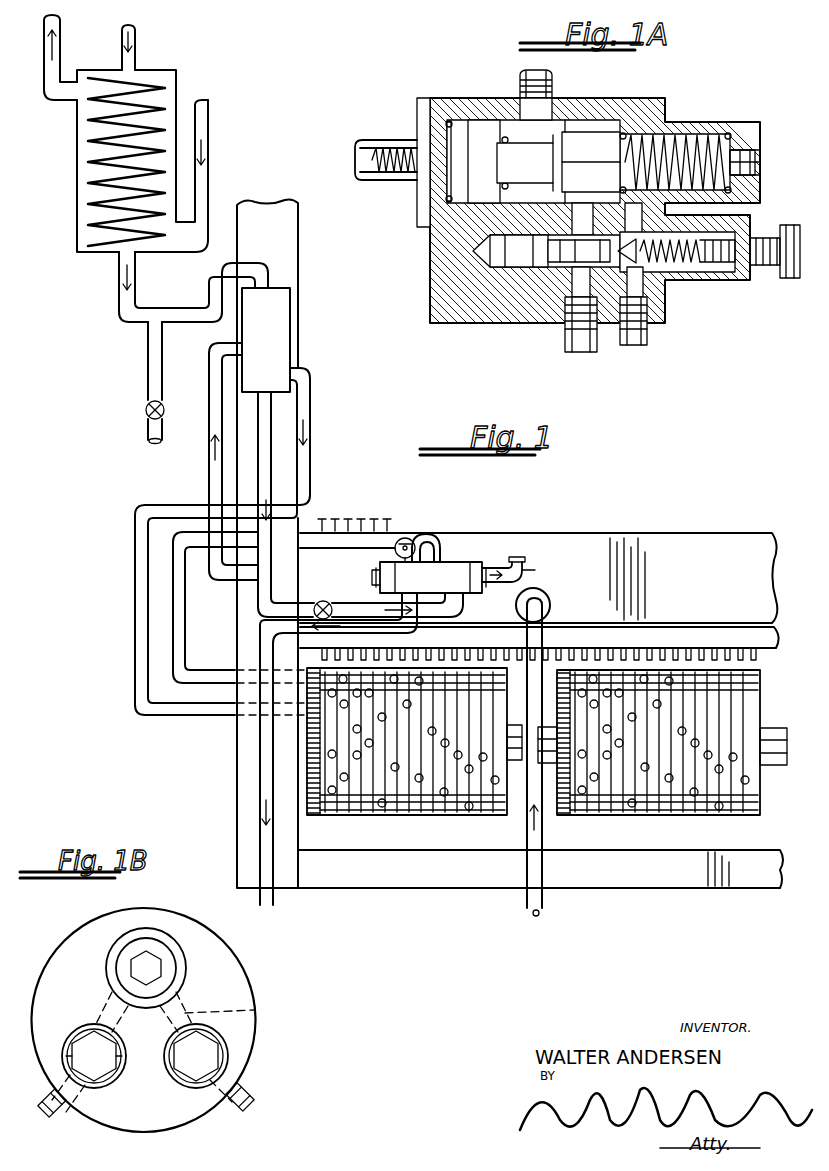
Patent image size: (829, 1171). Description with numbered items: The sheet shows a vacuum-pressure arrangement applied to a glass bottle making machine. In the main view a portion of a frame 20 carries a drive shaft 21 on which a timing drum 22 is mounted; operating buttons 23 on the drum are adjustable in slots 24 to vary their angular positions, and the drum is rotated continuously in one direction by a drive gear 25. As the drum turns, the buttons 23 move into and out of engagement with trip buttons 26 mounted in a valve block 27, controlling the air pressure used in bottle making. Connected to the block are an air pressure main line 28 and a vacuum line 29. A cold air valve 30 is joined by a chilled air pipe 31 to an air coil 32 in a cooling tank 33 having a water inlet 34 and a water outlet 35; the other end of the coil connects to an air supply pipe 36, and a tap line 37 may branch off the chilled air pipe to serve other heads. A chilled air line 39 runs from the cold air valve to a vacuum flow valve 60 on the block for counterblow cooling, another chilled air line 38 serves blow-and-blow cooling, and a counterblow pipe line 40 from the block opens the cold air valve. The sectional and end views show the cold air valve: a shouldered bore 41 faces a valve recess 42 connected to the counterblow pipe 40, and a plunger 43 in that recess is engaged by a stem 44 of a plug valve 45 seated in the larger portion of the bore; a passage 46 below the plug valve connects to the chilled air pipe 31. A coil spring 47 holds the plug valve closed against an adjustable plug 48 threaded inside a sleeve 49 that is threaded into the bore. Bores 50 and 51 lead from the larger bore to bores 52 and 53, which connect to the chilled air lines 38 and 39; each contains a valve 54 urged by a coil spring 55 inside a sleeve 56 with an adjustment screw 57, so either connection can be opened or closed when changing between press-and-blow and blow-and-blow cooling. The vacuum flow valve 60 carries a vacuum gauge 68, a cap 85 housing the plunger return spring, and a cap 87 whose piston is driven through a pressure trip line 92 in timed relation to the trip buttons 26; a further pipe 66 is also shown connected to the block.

In FIG. 1, the frame 20 is at (290, 257).
In FIG. 1, the drive shaft 21 is at (305, 745).
In FIG. 1, the timing drum 22 is at (456, 815).
In FIG. 1, the operating buttons 23 is at (333, 795).
In FIG. 1, the slots 24 is at (445, 760).
In FIG. 1, the drive gear 25 is at (312, 812).
In FIG. 1, the trip buttons 26 is at (450, 643).
In FIG. 1, the valve block 27 is at (563, 540).
In FIG. 1, the air pressure main line 28 is at (538, 912).
In FIG. 1, the vacuum line 29 is at (258, 892).
In FIG. 1, the cold air valve 30 is at (296, 337).
In FIG. 1A, the cold air valve 30 is at (665, 99).
In FIG. 1B, the cold air valve 30 is at (260, 990).
In FIG. 1, the chilled air pipe 31 is at (120, 294).
In FIG. 1A, the chilled air pipe 31 is at (553, 90).
In FIG. 1, the air coil 32 is at (98, 193).
In FIG. 1, the cooling tank 33 is at (78, 250).
In FIG. 1, the water inlet 34 is at (210, 175).
In FIG. 1, the water outlet 35 is at (60, 63).
In FIG. 1, the air supply pipe 36 is at (137, 43).
In FIG. 1, the tap line 37 is at (148, 428).
In FIG. 1, the chilled air line 38 is at (212, 428).
In FIG. 1A, the chilled air line 38 is at (583, 324).
In FIG. 1B, the chilled air line 38 is at (250, 1090).
In FIG. 1, the chilled air line 39 is at (258, 605).
In FIG. 1A, the chilled air line 39 is at (648, 340).
In FIG. 1B, the chilled air line 39 is at (50, 1112).
In FIG. 1, the counterblow pipe line 40 is at (305, 438).
In FIG. 1A, the counterblow pipe line 40 is at (382, 172).
In FIG. 1A, the shouldered bore 41 is at (598, 132).
In FIG. 1A, the valve recess 42 is at (467, 213).
In FIG. 1A, the plunger 43 is at (442, 135).
In FIG. 1A, the stem 44 is at (533, 165).
In FIG. 1A, the plug valve 45 is at (603, 154).
In FIG. 1A, the passage 46 is at (517, 100).
In FIG. 1A, the coil spring 47 is at (678, 140).
In FIG. 1A, the adjustable plug 48 is at (762, 138).
In FIG. 1B, the adjustable plug 48 is at (163, 970).
In FIG. 1A, the sleeve 49 is at (728, 130).
In FIG. 1B, the sleeve 49 is at (160, 930).
In FIG. 1B, the bore 50 is at (256, 1012).
In FIG. 1A, the bore 51 is at (578, 203).
In FIG. 1B, the bore 51 is at (110, 996).
In FIG. 1B, the bore 52 is at (226, 1050).
In FIG. 1A, the bore 53 is at (540, 268).
In FIG. 1B, the bore 53 is at (64, 1044).
In FIG. 1A, the valve 54 is at (528, 250).
In FIG. 1A, the coil spring 55 is at (668, 270).
In FIG. 1A, the sleeve 56 is at (708, 274).
In FIG. 1B, the sleeve 56 is at (104, 1090).
In FIG. 1A, the adjustment screw 57 is at (768, 273).
In FIG. 1B, the adjustment screw 57 is at (90, 1045).
In FIG. 1, the vacuum flow valve 60 is at (448, 586).
In FIG. 1, the pipe 66 is at (183, 612).
In FIG. 1, the vacuum gauge 68 is at (407, 540).
In FIG. 1, the cap 85 is at (380, 577).
In FIG. 1, the cap 87 is at (483, 565).
In FIG. 1, the pressure trip line 92 is at (535, 570).